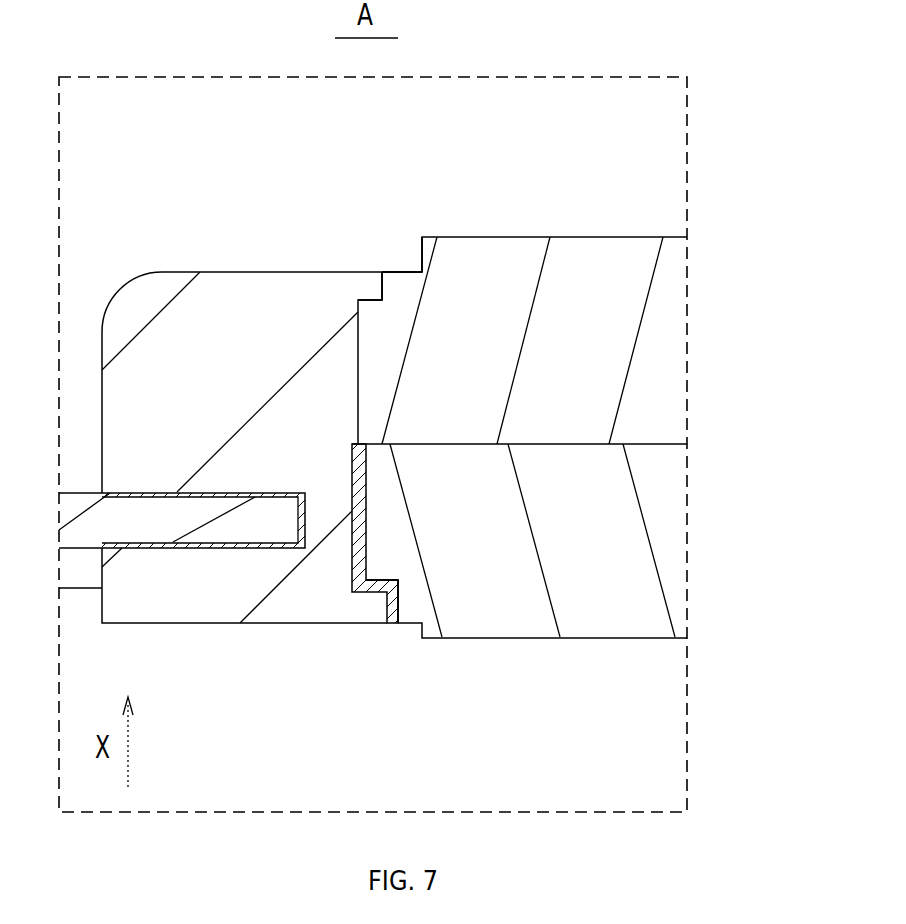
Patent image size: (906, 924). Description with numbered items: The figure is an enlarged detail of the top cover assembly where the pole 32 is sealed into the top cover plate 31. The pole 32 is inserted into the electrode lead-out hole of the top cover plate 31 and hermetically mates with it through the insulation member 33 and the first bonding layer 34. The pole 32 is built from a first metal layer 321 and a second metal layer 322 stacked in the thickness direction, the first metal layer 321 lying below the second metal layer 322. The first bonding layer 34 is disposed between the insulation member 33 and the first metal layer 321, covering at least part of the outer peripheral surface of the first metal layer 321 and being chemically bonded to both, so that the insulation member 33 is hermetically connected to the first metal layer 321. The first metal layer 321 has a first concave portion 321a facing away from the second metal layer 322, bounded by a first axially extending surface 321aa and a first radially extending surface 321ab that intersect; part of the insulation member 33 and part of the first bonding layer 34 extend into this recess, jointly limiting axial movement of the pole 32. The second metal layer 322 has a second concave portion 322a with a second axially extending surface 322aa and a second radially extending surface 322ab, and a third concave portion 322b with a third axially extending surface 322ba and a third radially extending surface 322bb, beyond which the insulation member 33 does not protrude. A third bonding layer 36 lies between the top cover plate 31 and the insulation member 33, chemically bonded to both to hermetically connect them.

The top cover plate 31 is at (257, 522).
The pole 32 is at (770, 332).
The insulation member 33 is at (237, 293).
The first bonding layer 34 is at (392, 621).
The third bonding layer 36 is at (152, 490).
The first metal layer 321 is at (653, 520).
The first concave portion 321a is at (560, 720).
The first axially extending surface 321aa is at (398, 598).
The first radially extending surface 321ab is at (387, 577).
The second metal layer 322 is at (650, 370).
The second concave portion 322a is at (372, 157).
The second axially extending surface 322aa is at (381, 280).
The second radially extending surface 322ab is at (364, 296).
The third concave portion 322b is at (543, 157).
The third radially extending surface 322bb is at (405, 271).
The third axially extending surface 322ba is at (423, 254).